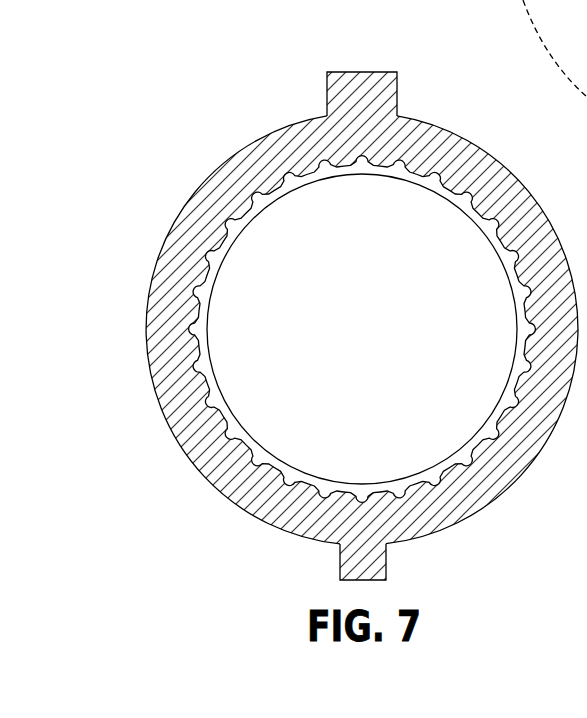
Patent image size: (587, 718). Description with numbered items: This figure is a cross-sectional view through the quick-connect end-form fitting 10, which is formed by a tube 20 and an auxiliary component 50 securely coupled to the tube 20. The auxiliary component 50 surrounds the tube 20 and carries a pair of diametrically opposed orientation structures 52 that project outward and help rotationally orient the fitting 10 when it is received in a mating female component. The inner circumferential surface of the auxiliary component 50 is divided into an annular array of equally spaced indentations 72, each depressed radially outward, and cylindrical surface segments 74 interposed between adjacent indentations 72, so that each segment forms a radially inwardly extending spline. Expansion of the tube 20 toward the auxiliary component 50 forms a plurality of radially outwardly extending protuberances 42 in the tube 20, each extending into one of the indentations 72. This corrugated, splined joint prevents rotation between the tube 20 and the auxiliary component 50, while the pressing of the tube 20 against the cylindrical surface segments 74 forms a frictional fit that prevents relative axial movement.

The fitting 10 is at (176, 96).
The tube 20 is at (262, 416).
The protuberances 42 is at (498, 433).
The auxiliary component 50 is at (175, 470).
The orientation structures 52 is at (397, 74).
The indentations 72 is at (428, 482).
The cylindrical surface segments 74 is at (555, 48).